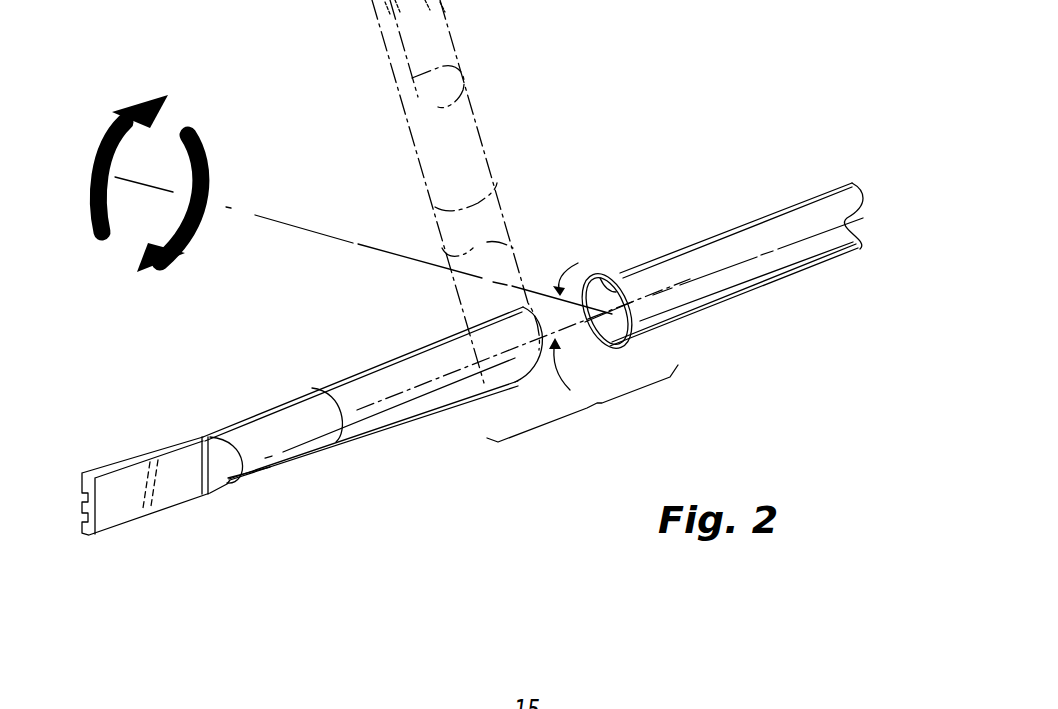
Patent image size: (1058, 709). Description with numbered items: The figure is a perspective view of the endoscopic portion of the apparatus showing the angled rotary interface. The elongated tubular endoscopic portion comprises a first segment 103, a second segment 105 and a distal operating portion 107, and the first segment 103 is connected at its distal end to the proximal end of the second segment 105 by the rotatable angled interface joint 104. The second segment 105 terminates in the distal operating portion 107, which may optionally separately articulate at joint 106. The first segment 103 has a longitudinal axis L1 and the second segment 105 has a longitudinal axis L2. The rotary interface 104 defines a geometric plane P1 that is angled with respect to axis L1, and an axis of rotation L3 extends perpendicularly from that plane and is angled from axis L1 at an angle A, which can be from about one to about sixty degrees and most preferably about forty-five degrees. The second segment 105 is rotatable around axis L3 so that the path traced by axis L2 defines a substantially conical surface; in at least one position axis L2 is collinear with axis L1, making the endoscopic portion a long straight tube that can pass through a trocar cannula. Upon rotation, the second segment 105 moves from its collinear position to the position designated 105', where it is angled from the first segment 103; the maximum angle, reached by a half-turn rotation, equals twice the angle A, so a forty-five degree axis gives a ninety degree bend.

The first segment 103 is at (761, 315).
The angled rotary interface joint 104 is at (582, 409).
The second segment 105 is at (312, 421).
The angled position of second segment 105' is at (493, 191).
The joint 106 is at (327, 393).
The distal operating portion 107 is at (258, 423).
The longitudinal axis of first segment L1 is at (729, 267).
The longitudinal axis of second segment L2 is at (384, 398).
The axis of rotation L3 is at (538, 290).
The geometric plane P1 is at (600, 277).
The angle A is at (562, 326).